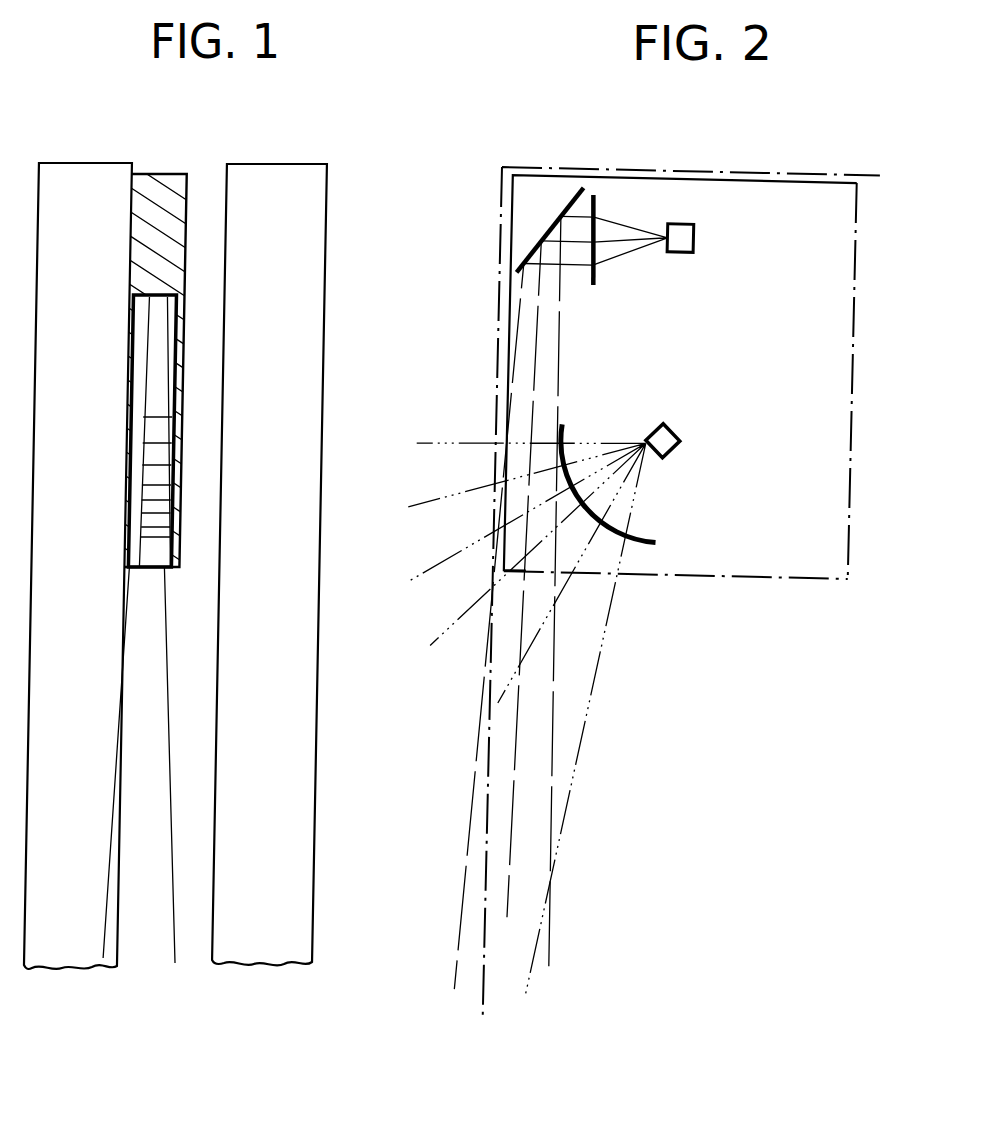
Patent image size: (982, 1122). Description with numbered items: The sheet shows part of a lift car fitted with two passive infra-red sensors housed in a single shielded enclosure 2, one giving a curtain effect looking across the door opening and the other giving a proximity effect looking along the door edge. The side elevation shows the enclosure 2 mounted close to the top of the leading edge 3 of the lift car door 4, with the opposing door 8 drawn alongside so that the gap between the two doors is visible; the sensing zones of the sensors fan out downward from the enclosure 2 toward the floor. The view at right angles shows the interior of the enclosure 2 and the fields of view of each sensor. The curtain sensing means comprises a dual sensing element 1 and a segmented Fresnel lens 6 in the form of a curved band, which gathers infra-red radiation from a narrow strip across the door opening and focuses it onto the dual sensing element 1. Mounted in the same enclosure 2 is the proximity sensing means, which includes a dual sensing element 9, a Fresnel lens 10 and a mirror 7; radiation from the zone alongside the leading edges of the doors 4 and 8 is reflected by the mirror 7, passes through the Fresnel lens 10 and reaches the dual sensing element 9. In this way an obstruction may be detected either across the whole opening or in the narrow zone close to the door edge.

In FIG. 2, the dual sensing element 1 is at (681, 426).
In FIG. 1, the shielded enclosure 2 is at (156, 177).
In FIG. 2, the shielded enclosure 2 is at (838, 172).
In FIG. 2, the leading edge 3 is at (500, 197).
In FIG. 1, the lift car door 4 is at (73, 162).
In FIG. 2, the segmented Fresnel lens 6 is at (658, 535).
In FIG. 2, the mirror 7 is at (568, 196).
In FIG. 1, the door 8 is at (260, 187).
In FIG. 2, the dual sensing element 9 is at (684, 226).
In FIG. 2, the Fresnel lens 10 is at (598, 198).